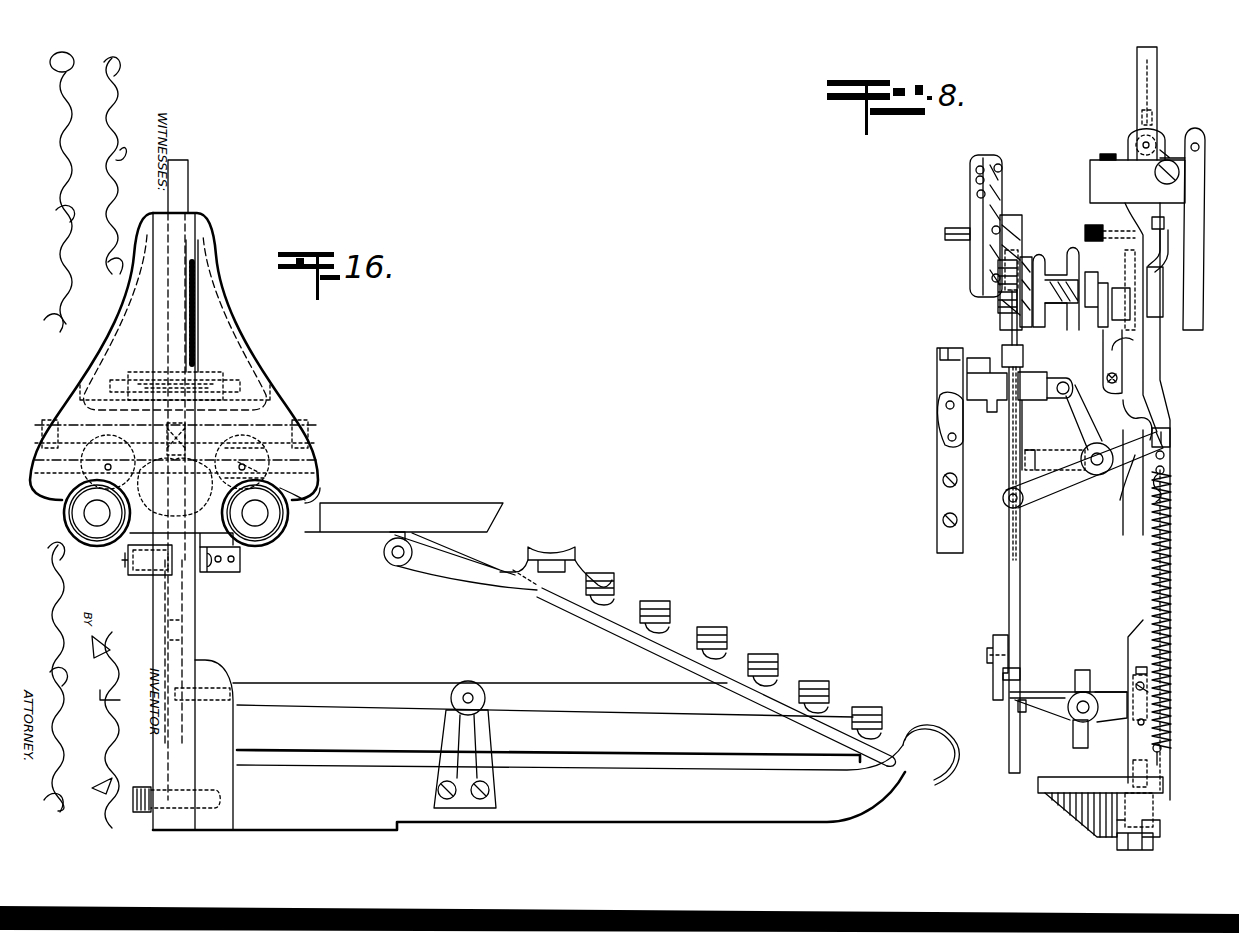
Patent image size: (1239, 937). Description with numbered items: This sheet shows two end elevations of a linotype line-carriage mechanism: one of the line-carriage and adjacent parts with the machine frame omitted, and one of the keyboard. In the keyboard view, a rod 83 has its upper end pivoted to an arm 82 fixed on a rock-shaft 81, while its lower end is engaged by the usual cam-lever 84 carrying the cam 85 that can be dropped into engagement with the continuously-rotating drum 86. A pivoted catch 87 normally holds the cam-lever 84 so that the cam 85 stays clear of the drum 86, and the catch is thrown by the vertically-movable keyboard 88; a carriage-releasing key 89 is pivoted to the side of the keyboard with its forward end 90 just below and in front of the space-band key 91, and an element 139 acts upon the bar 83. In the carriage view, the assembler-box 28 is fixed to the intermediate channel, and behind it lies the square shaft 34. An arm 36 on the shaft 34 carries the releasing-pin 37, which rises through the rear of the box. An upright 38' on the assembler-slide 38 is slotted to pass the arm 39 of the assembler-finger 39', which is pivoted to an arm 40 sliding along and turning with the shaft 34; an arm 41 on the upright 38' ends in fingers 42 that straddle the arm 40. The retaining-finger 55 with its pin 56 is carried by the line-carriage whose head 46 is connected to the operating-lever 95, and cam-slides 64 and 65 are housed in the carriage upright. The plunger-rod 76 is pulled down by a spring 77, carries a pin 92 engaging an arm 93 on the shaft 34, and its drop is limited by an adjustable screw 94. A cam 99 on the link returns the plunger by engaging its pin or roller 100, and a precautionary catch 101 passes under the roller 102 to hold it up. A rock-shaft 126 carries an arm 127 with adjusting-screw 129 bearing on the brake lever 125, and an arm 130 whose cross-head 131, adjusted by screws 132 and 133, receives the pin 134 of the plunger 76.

In FIG. 16, the rod 83 is at (182, 186).
In FIG. 8, the rod 83 is at (1196, 126).
In FIG. 16, the means acting upon bar 83 139 is at (198, 322).
In FIG. 16, the cam-lever 84 is at (243, 462).
In FIG. 16, the cam 85 is at (266, 468).
In FIG. 16, the continuously-rotating drum 86 is at (282, 500).
In FIG. 16, the pivoted catch 87 is at (217, 555).
In FIG. 16, the keyboard 88 is at (157, 628).
In FIG. 16, the carriage-releasing key 89 is at (522, 698).
In FIG. 16, the forward end of carriage-releasing key 90 is at (830, 712).
In FIG. 16, the space-band key 91 is at (672, 633).
In FIG. 8, the rock-shaft 81 is at (1160, 133).
In FIG. 8, the arm 82 is at (1186, 156).
In FIG. 8, the roller or pin 102 is at (1155, 218).
In FIG. 8, the precautionary catch 101 is at (1158, 252).
In FIG. 8, the pin or roller 100 is at (1090, 226).
In FIG. 8, the retaining-finger 55 is at (978, 212).
In FIG. 8, the pin 56 is at (950, 233).
In FIG. 8, the head of line-carriage 46 is at (978, 268).
In FIG. 8, the cam-slide 65 is at (1033, 263).
In FIG. 8, the cam 99 is at (1092, 278).
In FIG. 8, the cam-slide 64 is at (1000, 305).
In FIG. 8, the releasing-pin 37 is at (1011, 335).
In FIG. 8, the upright 38' is at (1034, 551).
In FIG. 8, the arm of assembler-finger 39 is at (1059, 374).
In FIG. 8, the assembler-box 28 is at (937, 384).
In FIG. 8, the assembler-finger 39' is at (987, 401).
In FIG. 8, the arm 40 is at (1068, 416).
In FIG. 8, the arm 41 is at (1040, 463).
In FIG. 8, the square shaft 34 is at (1098, 474).
In FIG. 8, the arm 36 is at (1048, 487).
In FIG. 8, the fingers 42 is at (1195, 392).
In FIG. 8, the plunger-rod 76 is at (1153, 406).
In FIG. 8, the pin 92 is at (1171, 440).
In FIG. 8, the arm 93 is at (1164, 481).
In FIG. 8, the operating-lever 95 is at (1131, 510).
In FIG. 8, the spring 77 is at (1170, 588).
In FIG. 8, the assembler-slide 38 is at (980, 667).
In FIG. 8, the lever 125 is at (1013, 683).
In FIG. 8, the rock-shaft 126 is at (1081, 700).
In FIG. 8, the arm 127 is at (1037, 695).
In FIG. 8, the adjusting-screw 129 is at (1021, 711).
In FIG. 8, the arm 130 is at (1110, 700).
In FIG. 8, the screw 132 is at (1160, 668).
In FIG. 8, the cross-head 131 is at (1158, 674).
In FIG. 8, the pin 134 is at (1150, 692).
In FIG. 8, the screw 133 is at (1162, 746).
In FIG. 8, the adjustable screw 94 is at (1143, 806).